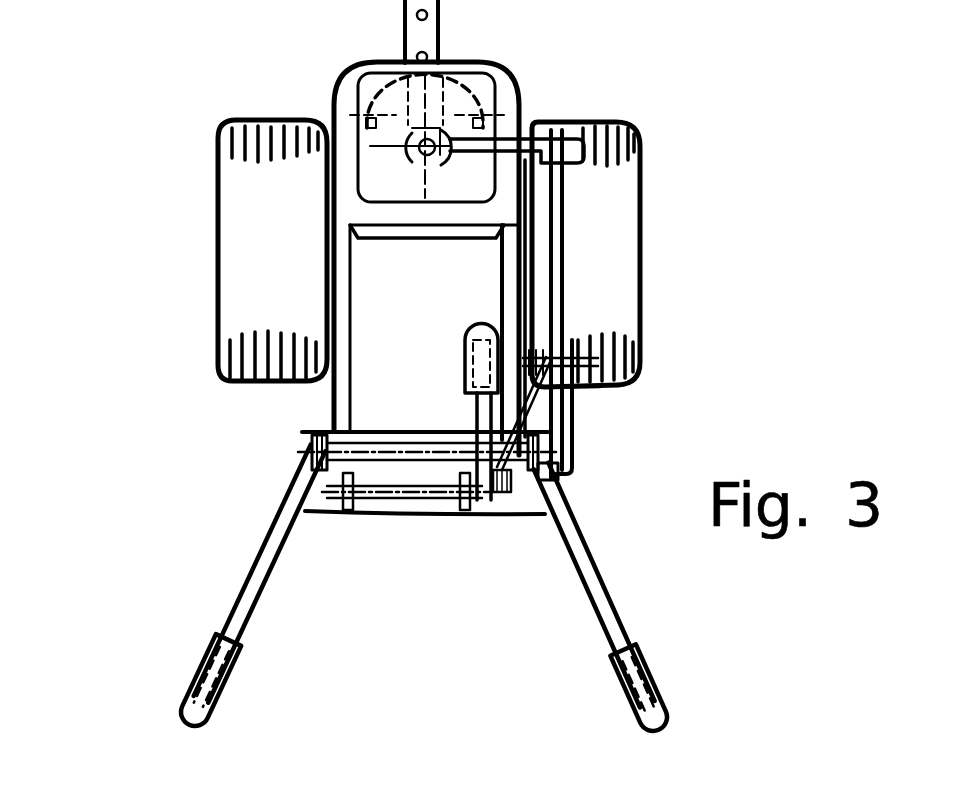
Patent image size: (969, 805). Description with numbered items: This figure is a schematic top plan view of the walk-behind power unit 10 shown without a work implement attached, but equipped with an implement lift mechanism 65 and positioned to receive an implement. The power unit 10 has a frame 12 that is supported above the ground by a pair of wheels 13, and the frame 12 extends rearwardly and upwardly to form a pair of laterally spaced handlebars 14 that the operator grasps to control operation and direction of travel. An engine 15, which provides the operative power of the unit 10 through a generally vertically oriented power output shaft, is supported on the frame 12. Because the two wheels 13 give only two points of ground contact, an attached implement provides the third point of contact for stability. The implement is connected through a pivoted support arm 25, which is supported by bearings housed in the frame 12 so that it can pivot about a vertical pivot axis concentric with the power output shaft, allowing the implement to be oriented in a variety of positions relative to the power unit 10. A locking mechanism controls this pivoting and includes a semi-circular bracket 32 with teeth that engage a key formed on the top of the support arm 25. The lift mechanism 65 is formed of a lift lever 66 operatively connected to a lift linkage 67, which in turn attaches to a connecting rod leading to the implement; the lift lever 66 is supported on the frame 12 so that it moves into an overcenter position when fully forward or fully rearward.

The walk-behind power unit 10 is at (196, 508).
The frame 12 is at (337, 418).
The wheels 13 is at (255, 384).
The handlebars 14 is at (193, 672).
The engine 15 is at (437, 203).
The support arm 25 is at (443, 26).
The semi-circular bracket 32 is at (472, 92).
The lift mechanism 65 is at (440, 547).
The lift lever 66 is at (463, 350).
The lift linkage 67 is at (560, 253).